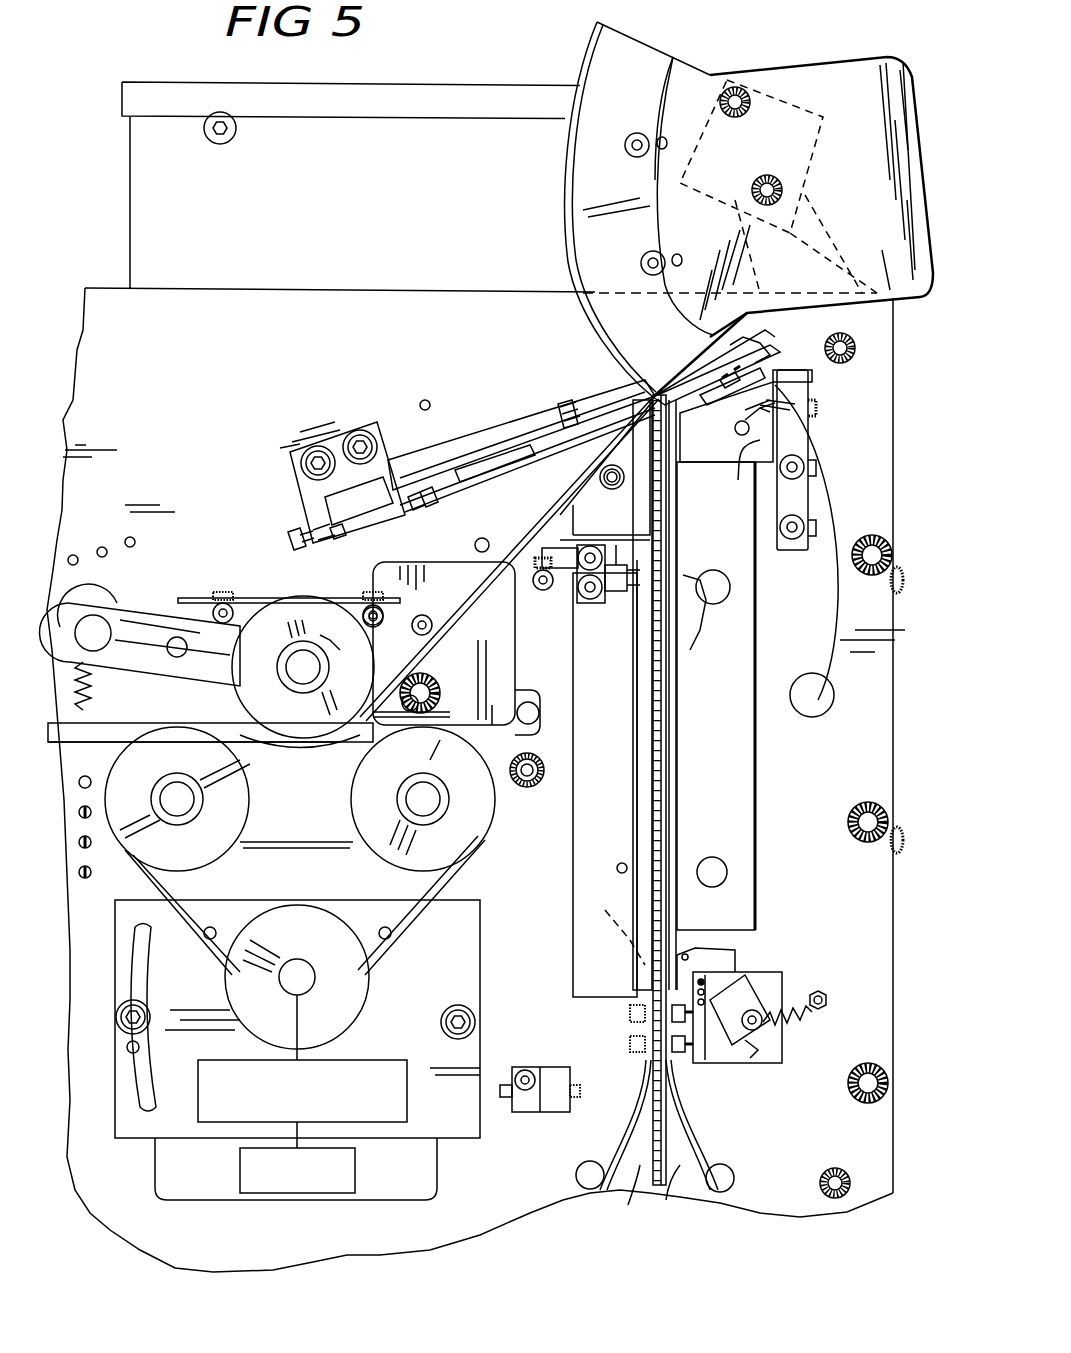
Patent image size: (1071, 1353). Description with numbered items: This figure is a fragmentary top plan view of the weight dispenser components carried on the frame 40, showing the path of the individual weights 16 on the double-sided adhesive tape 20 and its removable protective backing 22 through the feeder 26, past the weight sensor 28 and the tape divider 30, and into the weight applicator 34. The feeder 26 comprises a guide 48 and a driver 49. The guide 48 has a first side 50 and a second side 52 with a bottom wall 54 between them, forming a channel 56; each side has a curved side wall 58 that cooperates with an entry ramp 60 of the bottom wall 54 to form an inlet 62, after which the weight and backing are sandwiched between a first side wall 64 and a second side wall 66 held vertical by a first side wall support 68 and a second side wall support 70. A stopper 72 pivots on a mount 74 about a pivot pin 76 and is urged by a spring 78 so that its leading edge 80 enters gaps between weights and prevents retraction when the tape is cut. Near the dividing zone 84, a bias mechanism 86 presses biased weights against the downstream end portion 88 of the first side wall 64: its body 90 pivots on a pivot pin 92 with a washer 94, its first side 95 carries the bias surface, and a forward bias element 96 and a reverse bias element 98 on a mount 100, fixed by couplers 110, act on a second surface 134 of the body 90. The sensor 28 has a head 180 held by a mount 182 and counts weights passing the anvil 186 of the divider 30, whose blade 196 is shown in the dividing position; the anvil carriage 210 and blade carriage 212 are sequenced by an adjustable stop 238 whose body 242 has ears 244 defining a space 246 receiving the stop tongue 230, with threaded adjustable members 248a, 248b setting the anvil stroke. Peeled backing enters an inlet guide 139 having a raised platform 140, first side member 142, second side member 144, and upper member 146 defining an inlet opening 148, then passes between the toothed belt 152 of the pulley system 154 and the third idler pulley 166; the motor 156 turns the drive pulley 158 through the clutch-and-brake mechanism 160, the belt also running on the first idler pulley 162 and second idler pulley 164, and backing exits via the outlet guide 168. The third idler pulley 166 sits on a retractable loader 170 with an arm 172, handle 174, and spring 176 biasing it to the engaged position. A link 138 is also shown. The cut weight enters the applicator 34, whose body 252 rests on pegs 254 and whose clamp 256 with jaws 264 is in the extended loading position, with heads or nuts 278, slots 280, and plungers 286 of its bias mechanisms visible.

The individual imbalance correcting weights 16 is at (667, 738).
The double-sided adhesive tape 20 is at (650, 776).
The removable protective backing 22 is at (505, 565).
The feeder 26 is at (590, 935).
The weight sensor 28 is at (758, 425).
The tape divider 30 is at (452, 380).
The weight applicator 34 is at (768, 68).
The frame 40 is at (790, 820).
The guide 48 is at (598, 975).
The driver 49 is at (495, 940).
The first side 50 is at (735, 690).
The second side 52 is at (612, 705).
The bottom wall 54 is at (668, 1140).
The channel 56 is at (665, 896).
The curved side wall 58 is at (610, 1165).
The entry ramp 60 is at (686, 1193).
The inlet 62 is at (628, 1205).
The first side wall 64 is at (670, 780).
The second side wall 66 is at (640, 808).
The first side wall support 68 is at (750, 628).
The second side wall support 70 is at (588, 720).
The stopper 72 is at (718, 1005).
The mount 74 is at (712, 1060).
The pivot pin 76 is at (712, 985).
The spring 78 is at (815, 1022).
The leading edge 80 is at (619, 926).
The dividing zone 84 is at (648, 395).
The bias mechanism 86 is at (585, 625).
The downstream end portion 88 is at (683, 455).
The body 90 is at (605, 496).
The pivot pin 92 is at (614, 485).
The washer 94 is at (622, 470).
The first side 95 is at (683, 535).
The forward bias element 96 is at (552, 592).
The reverse bias element 98 is at (660, 622).
The mount 100 is at (592, 598).
The couplers 110 is at (690, 620).
The second surface 134 is at (605, 526).
The link arm 138 is at (545, 575).
The inlet guide 139 is at (405, 594).
The raised platform 140 is at (500, 708).
The first side member 142 is at (432, 632).
The second side member 144 is at (335, 608).
The upper member 146 is at (303, 667).
The inlet opening 148 is at (435, 688).
The belt 152 is at (470, 875).
The pulley system 154 is at (395, 905).
The motor 156 is at (357, 1180).
The drive pulley 158 is at (355, 990).
The clutch-and-brake mechanism 160 is at (365, 1060).
The first idler pulley 162 is at (490, 820).
The second idler pulley 164 is at (235, 830).
The third idler pulley 166 is at (297, 735).
The outlet guide 168 is at (100, 675).
The retractable loader 170 is at (132, 608).
The arm 172 is at (160, 625).
The handle 174 is at (105, 642).
The spring 176 is at (175, 718).
The head 180 is at (733, 414).
The mount 182 is at (810, 392).
The anvil 186 is at (765, 358).
The blade 196 is at (530, 470).
The anvil carriage 210 is at (810, 378).
The blade carriage 212 is at (555, 425).
The stop tongue 230 is at (373, 520).
The adjustable stop 238 is at (300, 510).
The body 242 is at (370, 420).
The ears 244 is at (400, 540).
The space 246 is at (395, 460).
The threaded adjustable member 248a is at (440, 488).
The threaded adjustable member 248b is at (288, 538).
The body 252 is at (815, 95).
The pegs 254 is at (767, 176).
The clamp 256 is at (612, 68).
The jaws 264 is at (668, 60).
The head or nut 278 is at (633, 133).
The slots 280 is at (665, 135).
The plunger 286 is at (668, 143).